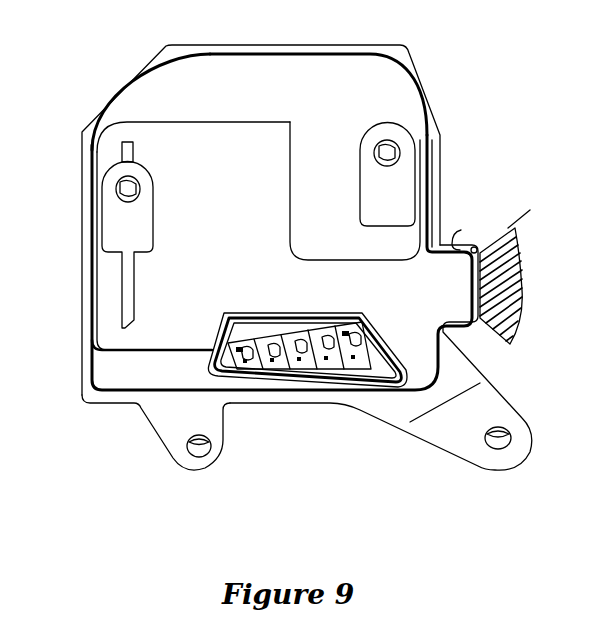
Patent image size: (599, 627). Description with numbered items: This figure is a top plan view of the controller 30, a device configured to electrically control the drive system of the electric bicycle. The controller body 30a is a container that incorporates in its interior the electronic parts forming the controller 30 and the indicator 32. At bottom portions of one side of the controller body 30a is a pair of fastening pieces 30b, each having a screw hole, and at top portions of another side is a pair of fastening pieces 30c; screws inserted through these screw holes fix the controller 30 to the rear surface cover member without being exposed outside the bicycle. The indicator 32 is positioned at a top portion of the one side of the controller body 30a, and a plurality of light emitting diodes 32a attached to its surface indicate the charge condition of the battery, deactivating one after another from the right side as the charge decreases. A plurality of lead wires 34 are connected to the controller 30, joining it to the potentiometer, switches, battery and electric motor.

The controller 30 is at (280, 258).
The controller body 30a is at (241, 68).
The fastening pieces 30b is at (182, 456).
The fastening pieces 30c is at (108, 192).
The indicator 32 is at (307, 377).
The light emitting diodes 32a is at (311, 356).
The lead wires 34 is at (485, 255).